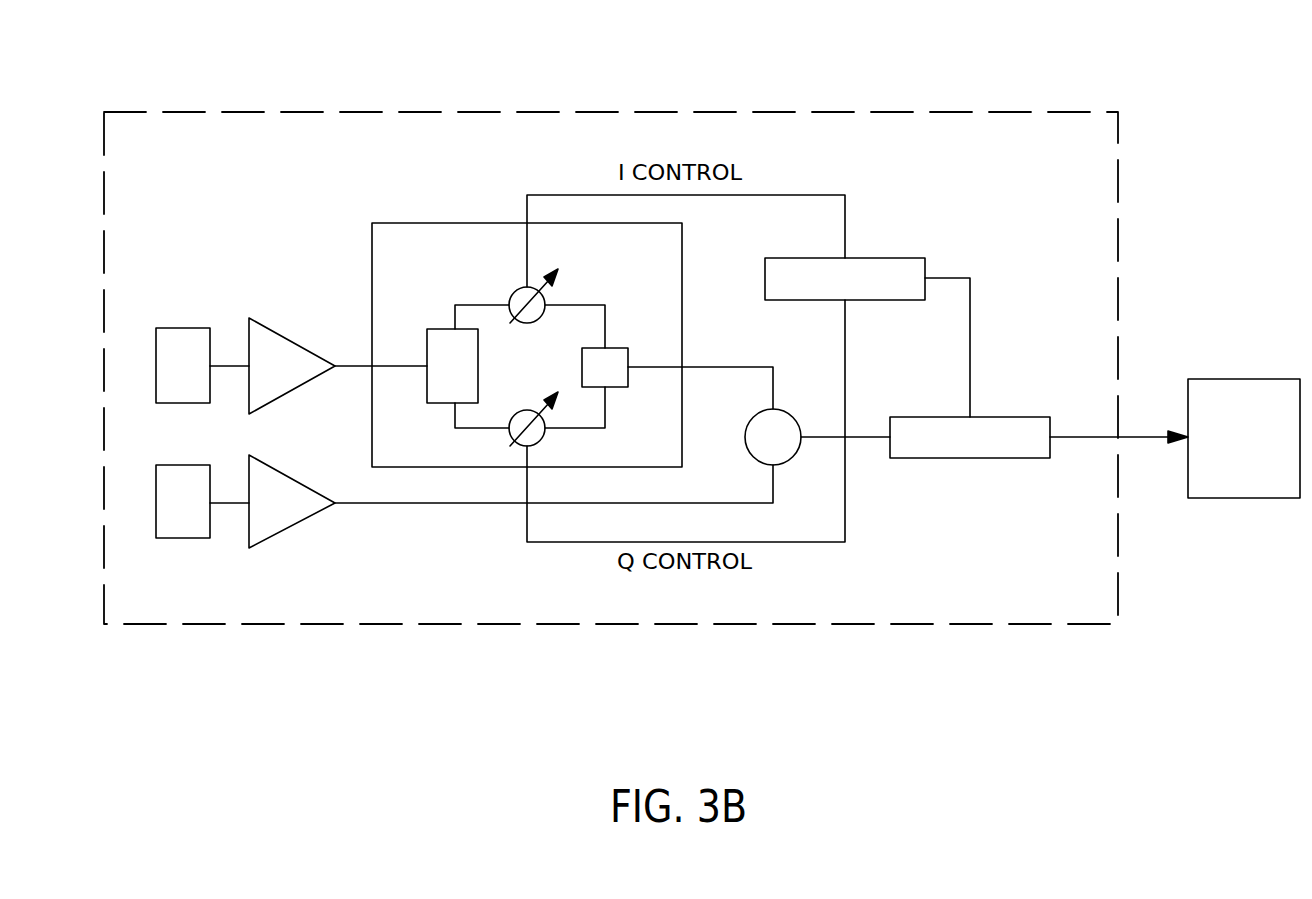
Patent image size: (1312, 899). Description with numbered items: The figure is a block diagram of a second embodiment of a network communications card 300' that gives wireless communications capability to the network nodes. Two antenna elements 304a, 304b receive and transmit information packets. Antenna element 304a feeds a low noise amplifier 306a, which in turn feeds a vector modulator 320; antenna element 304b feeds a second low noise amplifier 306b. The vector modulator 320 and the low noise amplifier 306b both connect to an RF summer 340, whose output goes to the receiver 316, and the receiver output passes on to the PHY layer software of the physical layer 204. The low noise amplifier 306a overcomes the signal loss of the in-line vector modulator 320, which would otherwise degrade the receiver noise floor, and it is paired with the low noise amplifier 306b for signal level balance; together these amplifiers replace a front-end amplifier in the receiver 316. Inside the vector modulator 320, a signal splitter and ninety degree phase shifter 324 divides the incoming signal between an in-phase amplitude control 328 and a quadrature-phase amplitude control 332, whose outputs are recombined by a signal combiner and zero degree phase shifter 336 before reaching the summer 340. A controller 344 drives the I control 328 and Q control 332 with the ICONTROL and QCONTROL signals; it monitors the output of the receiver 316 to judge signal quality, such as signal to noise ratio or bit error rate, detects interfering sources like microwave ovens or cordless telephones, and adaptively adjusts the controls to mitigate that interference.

The physical layer 204 is at (1272, 379).
The network communications card 300' is at (611, 318).
The antenna element 304a is at (184, 328).
The antenna element 304b is at (180, 538).
The low noise amplifier 306a is at (283, 337).
The low noise amplifier 306b is at (291, 528).
The receiver 316 is at (1026, 417).
The vector modulator 320 is at (648, 262).
The signal splitter and 90 degree phase shifter 324 is at (427, 347).
The in-phase amplitude control 328 is at (515, 292).
The quadrature-phase amplitude control 332 is at (510, 437).
The signal combiner and 0 degree phase shifter 336 is at (628, 366).
The RF summer 340 is at (792, 412).
The controller 344 is at (880, 258).